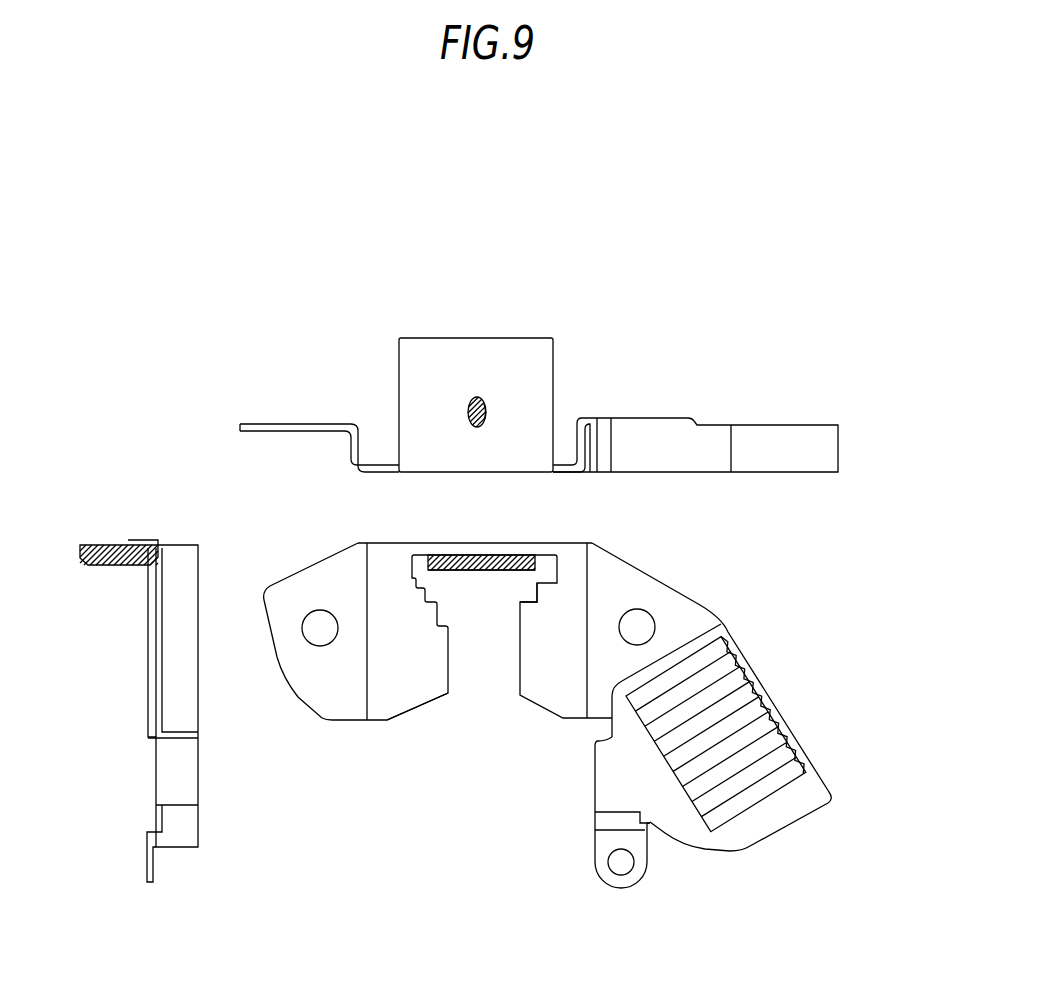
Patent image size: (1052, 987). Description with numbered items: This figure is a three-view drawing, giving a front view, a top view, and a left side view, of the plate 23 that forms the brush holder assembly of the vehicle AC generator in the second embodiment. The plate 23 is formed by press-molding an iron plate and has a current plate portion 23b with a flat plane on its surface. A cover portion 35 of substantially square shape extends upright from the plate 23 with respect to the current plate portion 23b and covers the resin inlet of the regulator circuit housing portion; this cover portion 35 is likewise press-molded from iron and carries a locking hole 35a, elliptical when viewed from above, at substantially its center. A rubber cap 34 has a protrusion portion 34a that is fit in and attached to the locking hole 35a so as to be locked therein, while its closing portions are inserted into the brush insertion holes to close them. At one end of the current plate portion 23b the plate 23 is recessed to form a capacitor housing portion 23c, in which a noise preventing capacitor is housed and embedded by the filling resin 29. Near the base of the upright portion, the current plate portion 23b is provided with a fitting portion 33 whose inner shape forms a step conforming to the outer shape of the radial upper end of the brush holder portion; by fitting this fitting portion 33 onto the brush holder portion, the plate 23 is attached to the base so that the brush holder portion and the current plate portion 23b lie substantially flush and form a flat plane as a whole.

The plate 23 is at (268, 427).
The current plate portion 23b is at (381, 713).
The capacitor housing portion 23c is at (755, 697).
The filling resin 29 is at (780, 755).
The fitting portion 33 is at (522, 590).
The cap 34 is at (113, 550).
The protrusion portion 34a is at (478, 396).
The cover portion 35 is at (517, 355).
The locking hole 35a is at (488, 413).